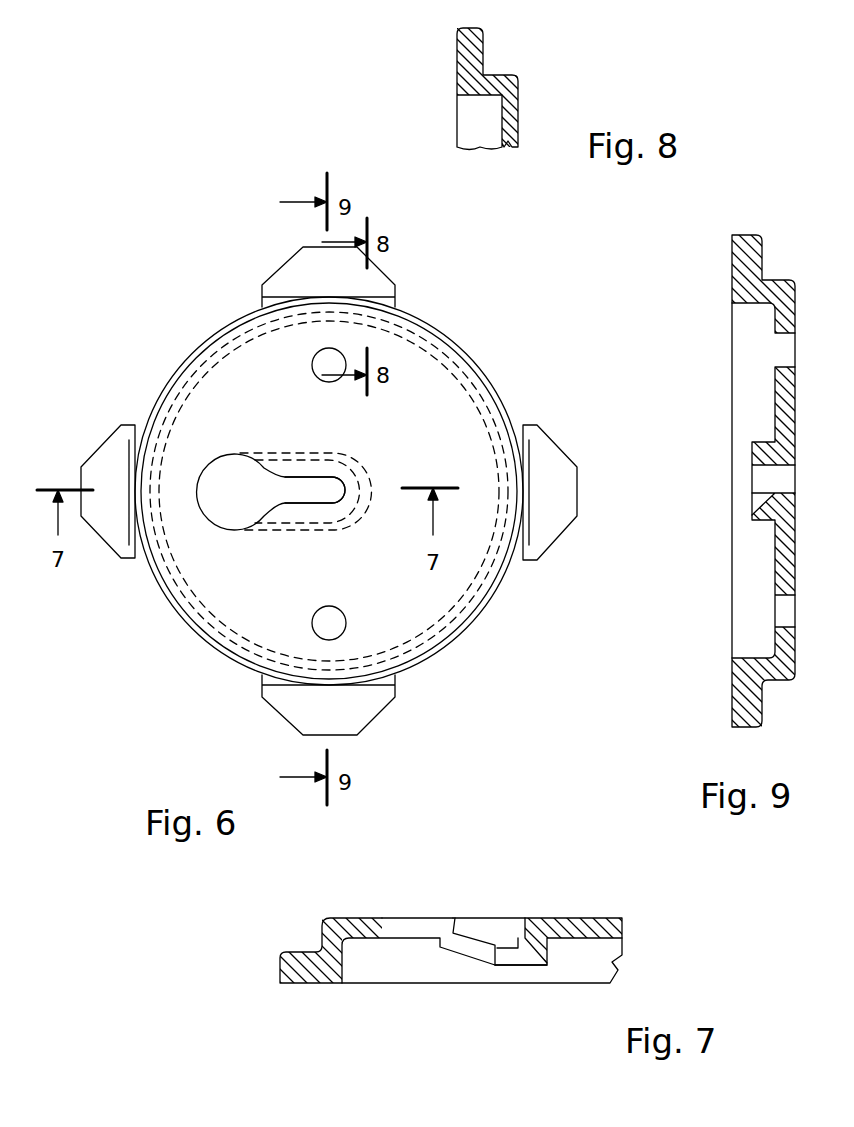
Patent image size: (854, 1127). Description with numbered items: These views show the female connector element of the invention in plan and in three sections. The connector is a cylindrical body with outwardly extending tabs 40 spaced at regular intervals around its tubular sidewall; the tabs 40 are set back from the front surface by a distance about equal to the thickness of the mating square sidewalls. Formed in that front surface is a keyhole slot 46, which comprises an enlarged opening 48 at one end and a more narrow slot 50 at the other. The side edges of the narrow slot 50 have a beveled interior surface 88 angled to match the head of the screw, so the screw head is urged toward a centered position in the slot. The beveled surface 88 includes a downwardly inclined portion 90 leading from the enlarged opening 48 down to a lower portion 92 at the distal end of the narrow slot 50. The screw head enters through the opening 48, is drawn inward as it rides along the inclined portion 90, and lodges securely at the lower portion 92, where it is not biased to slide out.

In FIG. 8, the tab 40 is at (480, 42).
In FIG. 6, the keyhole slot 46 is at (257, 545).
In FIG. 6, the enlarged opening 48 is at (223, 528).
In FIG. 7, the enlarged opening 48 is at (415, 927).
In FIG. 6, the narrow slot 50 is at (303, 505).
In FIG. 9, the interior surface 88 is at (768, 500).
In FIG. 7, the interior surface 88 is at (517, 975).
In FIG. 7, the downwardly inclined portion 90 is at (475, 950).
In FIG. 7, the lower portion 92 is at (515, 950).